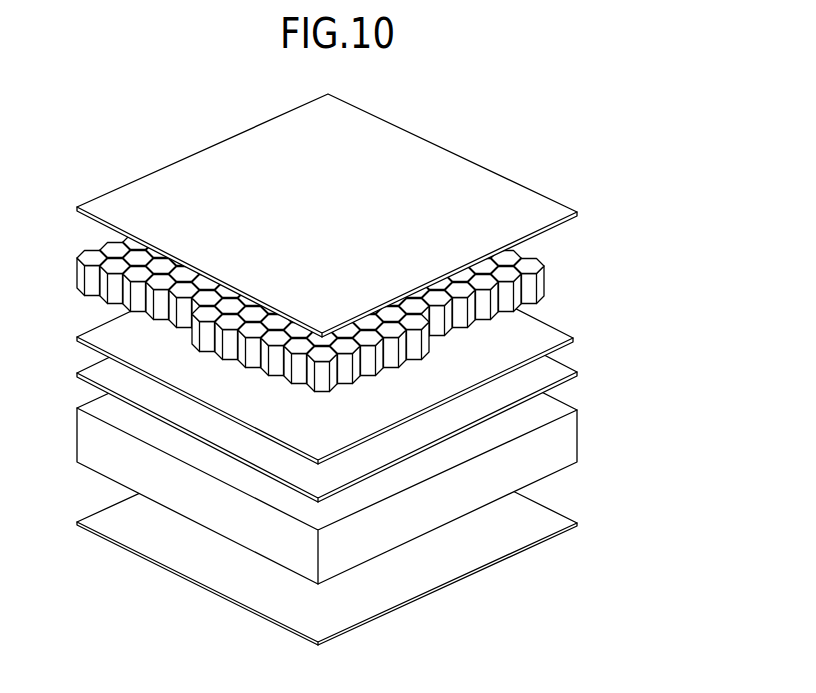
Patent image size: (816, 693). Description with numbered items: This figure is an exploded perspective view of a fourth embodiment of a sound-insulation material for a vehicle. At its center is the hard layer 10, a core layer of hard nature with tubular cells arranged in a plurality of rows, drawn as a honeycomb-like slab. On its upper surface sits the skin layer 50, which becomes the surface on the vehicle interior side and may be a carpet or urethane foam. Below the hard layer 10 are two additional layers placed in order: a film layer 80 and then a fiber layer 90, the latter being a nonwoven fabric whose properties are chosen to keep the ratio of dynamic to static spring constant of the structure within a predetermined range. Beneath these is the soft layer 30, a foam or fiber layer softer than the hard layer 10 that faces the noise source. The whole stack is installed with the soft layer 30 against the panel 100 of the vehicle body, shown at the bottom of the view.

The skin layer 50 is at (577, 212).
The hard layer 10 is at (555, 283).
The film layer 80 is at (575, 339).
The fiber layer 90 is at (577, 375).
The soft layer 30 is at (577, 450).
The panel 100 is at (577, 523).